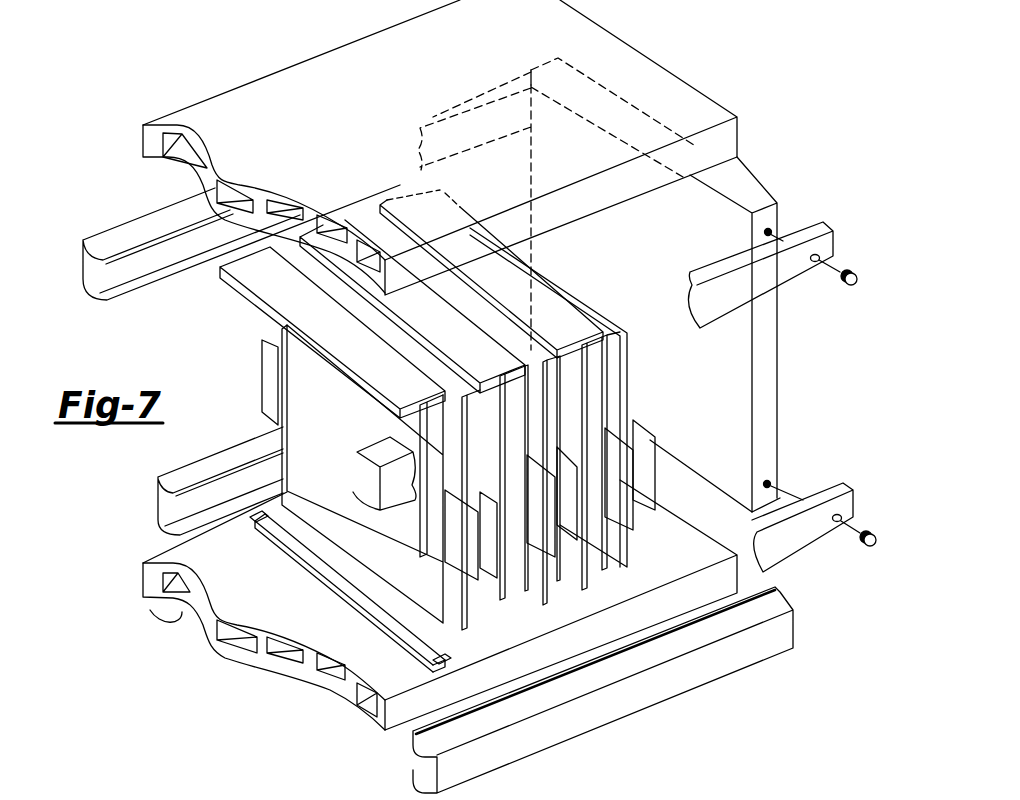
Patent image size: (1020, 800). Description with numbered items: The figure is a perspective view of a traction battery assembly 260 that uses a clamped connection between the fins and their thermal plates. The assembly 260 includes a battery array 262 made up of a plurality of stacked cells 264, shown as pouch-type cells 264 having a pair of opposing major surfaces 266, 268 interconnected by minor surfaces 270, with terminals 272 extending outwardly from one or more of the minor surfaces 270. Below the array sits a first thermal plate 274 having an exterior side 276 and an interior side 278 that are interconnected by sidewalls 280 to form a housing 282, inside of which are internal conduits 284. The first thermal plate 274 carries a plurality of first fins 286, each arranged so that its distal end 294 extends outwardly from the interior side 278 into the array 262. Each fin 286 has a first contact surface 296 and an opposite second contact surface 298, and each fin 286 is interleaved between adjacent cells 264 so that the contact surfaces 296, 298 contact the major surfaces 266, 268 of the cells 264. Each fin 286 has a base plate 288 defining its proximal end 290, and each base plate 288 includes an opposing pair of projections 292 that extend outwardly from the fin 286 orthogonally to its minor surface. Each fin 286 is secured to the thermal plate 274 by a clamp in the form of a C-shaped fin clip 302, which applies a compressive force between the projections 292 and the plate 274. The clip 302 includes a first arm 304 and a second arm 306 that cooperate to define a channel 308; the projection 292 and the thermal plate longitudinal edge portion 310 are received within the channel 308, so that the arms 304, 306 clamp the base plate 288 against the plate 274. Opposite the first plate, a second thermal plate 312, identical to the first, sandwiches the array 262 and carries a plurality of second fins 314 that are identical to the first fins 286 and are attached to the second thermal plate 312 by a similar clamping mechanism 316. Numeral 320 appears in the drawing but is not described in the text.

The traction battery assembly 260 is at (698, 44).
The battery array 262 is at (158, 330).
The stacked cells 264 is at (441, 584).
The major surface 266 is at (355, 519).
The major surface 268 is at (632, 340).
The minor surfaces 270 is at (462, 452).
The terminals 272 is at (648, 437).
The first thermal plate 274 is at (383, 730).
The exterior side 276 is at (182, 612).
The interior side 278 is at (267, 593).
The sidewalls 280 is at (725, 587).
The housing 282 is at (167, 562).
The internal conduits 284 is at (290, 648).
The first fins 286 is at (367, 597).
The base plate 288 is at (290, 533).
The proximal end 290 is at (622, 598).
The projections 292 is at (265, 515).
The distal end 294 is at (618, 360).
The first contact surface 296 is at (450, 598).
The second contact surface 298 is at (630, 563).
The fin clip 302 is at (213, 465).
The first arm 304 is at (420, 783).
The second arm 306 is at (617, 673).
The channel 308 is at (410, 762).
The thermal plate longitudinal edge portion 310 is at (712, 545).
The second thermal plate 312 is at (398, 64).
The second fins 314 is at (332, 396).
The clamping mechanism 316 is at (105, 243).
The fastener 320 is at (145, 795).